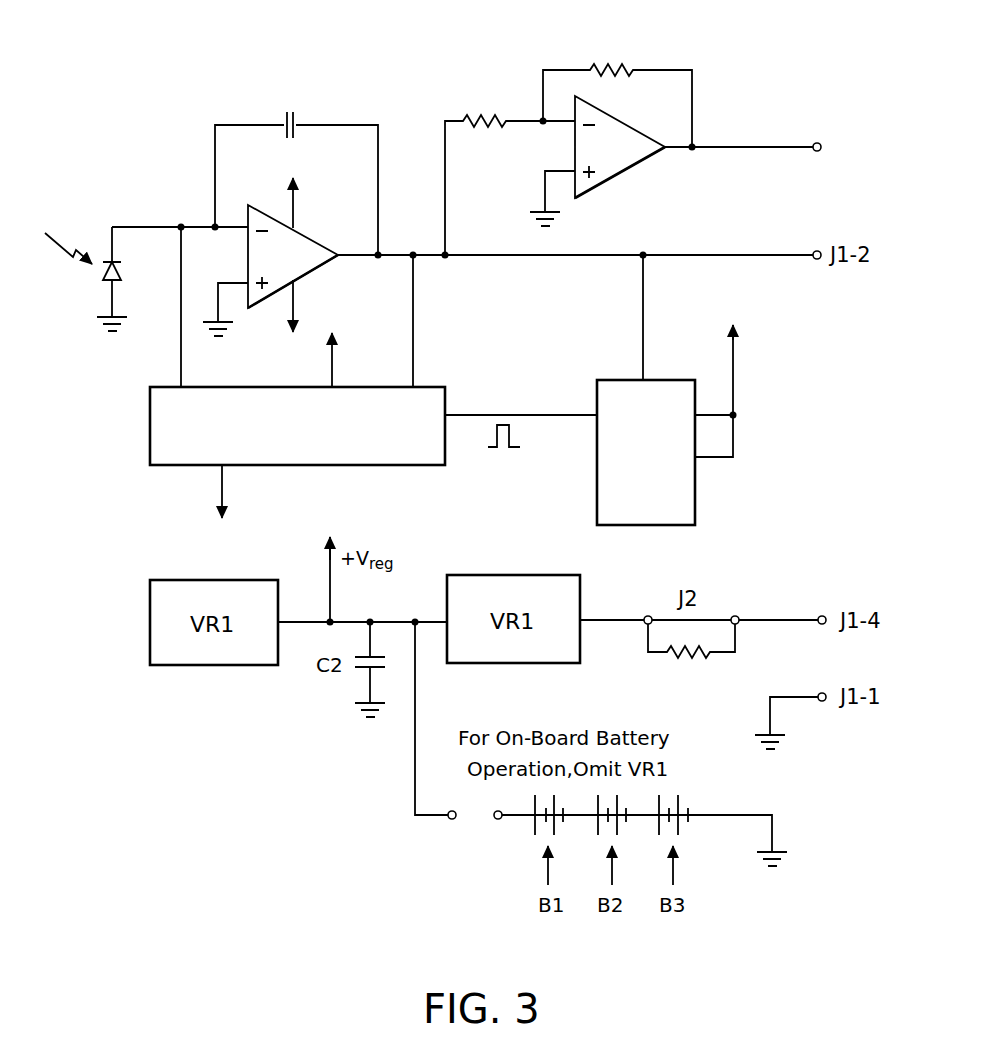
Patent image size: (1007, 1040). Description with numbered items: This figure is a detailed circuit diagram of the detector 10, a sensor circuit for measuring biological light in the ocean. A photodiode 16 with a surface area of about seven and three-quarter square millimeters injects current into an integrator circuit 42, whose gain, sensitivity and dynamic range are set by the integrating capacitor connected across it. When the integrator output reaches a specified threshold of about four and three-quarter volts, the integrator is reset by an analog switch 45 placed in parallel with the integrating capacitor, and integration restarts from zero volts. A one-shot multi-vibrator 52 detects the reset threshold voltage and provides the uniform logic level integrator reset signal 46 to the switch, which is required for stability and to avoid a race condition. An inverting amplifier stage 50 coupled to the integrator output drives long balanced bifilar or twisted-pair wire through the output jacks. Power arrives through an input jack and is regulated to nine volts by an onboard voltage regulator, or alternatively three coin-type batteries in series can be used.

The photodetector preamplifier circuit 10 is at (186, 124).
The photodiode 16 is at (122, 272).
The integrator circuit 42 is at (268, 215).
The analog switch 45 is at (447, 393).
The integrator reset signal 46 is at (503, 452).
The inverting amplifier stage 50 is at (728, 77).
The one-shot multi-vibrator 52 is at (615, 380).